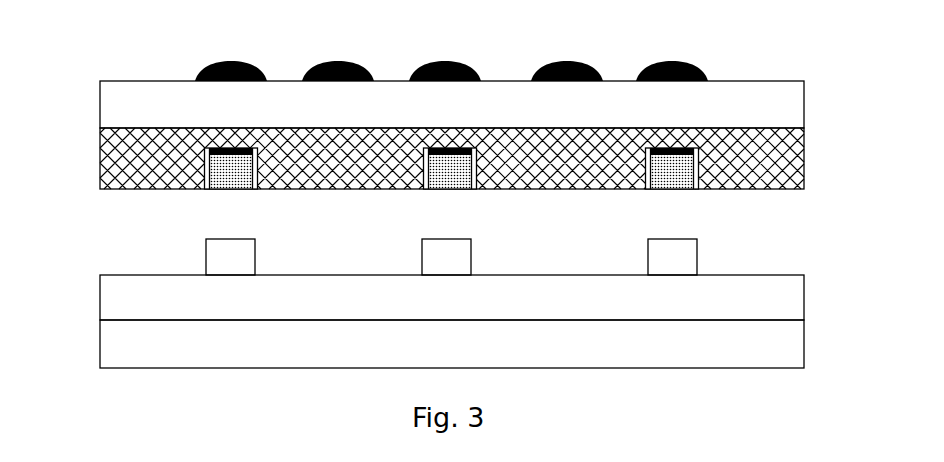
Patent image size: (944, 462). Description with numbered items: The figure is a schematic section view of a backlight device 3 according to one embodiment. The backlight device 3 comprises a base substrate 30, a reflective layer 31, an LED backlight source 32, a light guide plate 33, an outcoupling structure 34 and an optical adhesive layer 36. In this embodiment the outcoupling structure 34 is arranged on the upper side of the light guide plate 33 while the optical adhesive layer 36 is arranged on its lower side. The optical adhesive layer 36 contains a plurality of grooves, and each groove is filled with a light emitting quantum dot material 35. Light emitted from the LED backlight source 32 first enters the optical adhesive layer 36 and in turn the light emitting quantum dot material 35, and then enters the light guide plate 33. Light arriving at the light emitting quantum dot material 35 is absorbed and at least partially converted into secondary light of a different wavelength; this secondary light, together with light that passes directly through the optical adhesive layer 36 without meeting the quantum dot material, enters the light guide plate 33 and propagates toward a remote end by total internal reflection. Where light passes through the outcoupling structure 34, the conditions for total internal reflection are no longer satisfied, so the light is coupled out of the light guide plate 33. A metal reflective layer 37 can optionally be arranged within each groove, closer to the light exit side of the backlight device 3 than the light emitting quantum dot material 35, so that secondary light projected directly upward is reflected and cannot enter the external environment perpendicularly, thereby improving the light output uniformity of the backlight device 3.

The backlight device 3 is at (452, 202).
The base substrate 30 is at (787, 301).
The reflective layer 31 is at (789, 352).
The LED backlight source 32 is at (687, 265).
The light guide plate 33 is at (779, 92).
The outcoupling structure 34 is at (202, 72).
The light emitting quantum dot material 35 is at (223, 172).
The optical adhesive layer 36 is at (784, 158).
The metal reflective layer 37 is at (208, 149).